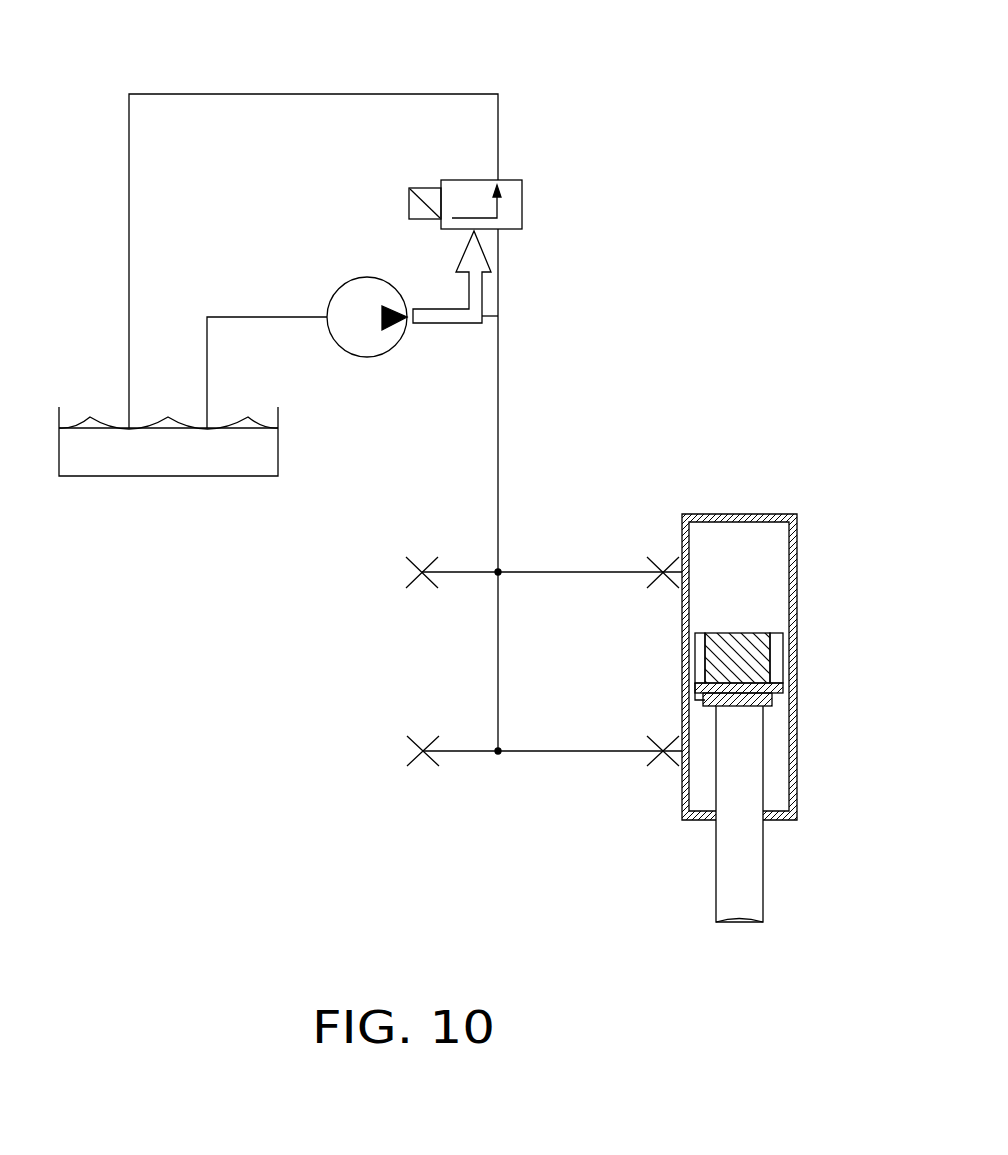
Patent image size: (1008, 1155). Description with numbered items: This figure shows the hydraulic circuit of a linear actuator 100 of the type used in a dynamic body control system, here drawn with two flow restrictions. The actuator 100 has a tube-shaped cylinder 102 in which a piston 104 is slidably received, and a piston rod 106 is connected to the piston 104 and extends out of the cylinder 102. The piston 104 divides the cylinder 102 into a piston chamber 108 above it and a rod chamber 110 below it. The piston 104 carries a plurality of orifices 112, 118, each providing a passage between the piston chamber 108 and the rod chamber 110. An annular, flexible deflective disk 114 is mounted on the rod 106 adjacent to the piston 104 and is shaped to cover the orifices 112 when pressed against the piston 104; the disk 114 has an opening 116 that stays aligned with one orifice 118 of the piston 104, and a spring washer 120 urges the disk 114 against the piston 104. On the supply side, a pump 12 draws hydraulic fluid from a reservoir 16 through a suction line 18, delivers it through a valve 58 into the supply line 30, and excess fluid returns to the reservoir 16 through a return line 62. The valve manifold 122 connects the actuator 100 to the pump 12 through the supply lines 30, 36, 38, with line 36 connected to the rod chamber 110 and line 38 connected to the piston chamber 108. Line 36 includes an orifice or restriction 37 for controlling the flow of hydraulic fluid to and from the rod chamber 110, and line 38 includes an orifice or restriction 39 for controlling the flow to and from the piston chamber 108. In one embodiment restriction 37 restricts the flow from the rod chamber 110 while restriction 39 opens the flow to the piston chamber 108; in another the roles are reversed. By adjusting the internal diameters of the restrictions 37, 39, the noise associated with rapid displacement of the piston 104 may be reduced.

The return line 62 is at (213, 94).
The solenoid valve 58 is at (508, 190).
The pump 12 is at (355, 290).
The suction line 18 is at (255, 315).
The reservoir 16 is at (108, 463).
The supply line 30 is at (498, 407).
The supply line 38 is at (557, 572).
The restriction 39 is at (657, 557).
The supply line 36 is at (557, 751).
The restriction 37 is at (654, 766).
The valve manifold 122 is at (308, 754).
The linear actuator 100 is at (742, 658).
The cylinder 102 is at (773, 514).
The piston chamber 108 is at (767, 585).
The rod chamber 110 is at (780, 775).
The piston 104 is at (755, 640).
The orifices 112 is at (700, 649).
The orifice 118 is at (775, 658).
The opening 116 is at (785, 692).
The deflective disk 114 is at (697, 697).
The spring washer 120 is at (775, 708).
The piston rod 106 is at (757, 862).